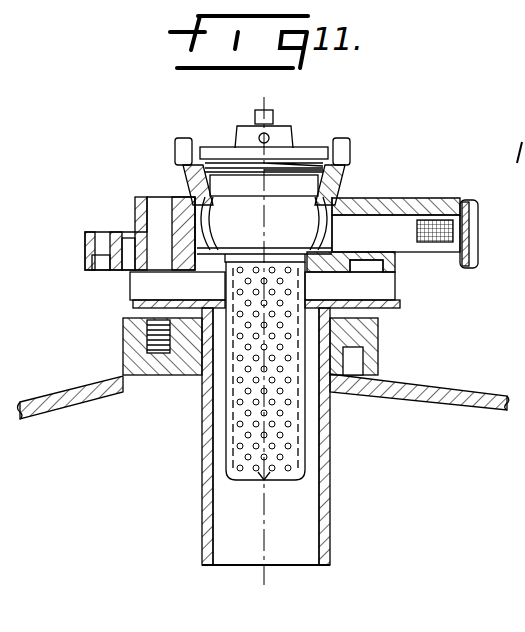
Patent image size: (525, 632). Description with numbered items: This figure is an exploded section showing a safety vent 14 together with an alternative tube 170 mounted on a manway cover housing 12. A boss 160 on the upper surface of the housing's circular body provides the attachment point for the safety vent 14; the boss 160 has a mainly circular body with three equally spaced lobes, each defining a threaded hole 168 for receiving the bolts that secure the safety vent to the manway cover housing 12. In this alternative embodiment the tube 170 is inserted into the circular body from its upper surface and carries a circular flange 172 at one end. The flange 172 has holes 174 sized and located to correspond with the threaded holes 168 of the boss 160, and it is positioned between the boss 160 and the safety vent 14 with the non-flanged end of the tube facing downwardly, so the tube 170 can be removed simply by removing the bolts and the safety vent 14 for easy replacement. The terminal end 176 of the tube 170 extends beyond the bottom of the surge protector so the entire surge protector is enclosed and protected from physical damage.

The manway cover housing 12 is at (462, 375).
The safety vent 14 is at (380, 189).
The boss 160 is at (123, 358).
The threaded hole 168 is at (150, 331).
The tube 170 is at (203, 494).
The circular flange 172 is at (400, 303).
The holes 174 is at (160, 303).
The terminal end 176 is at (330, 565).